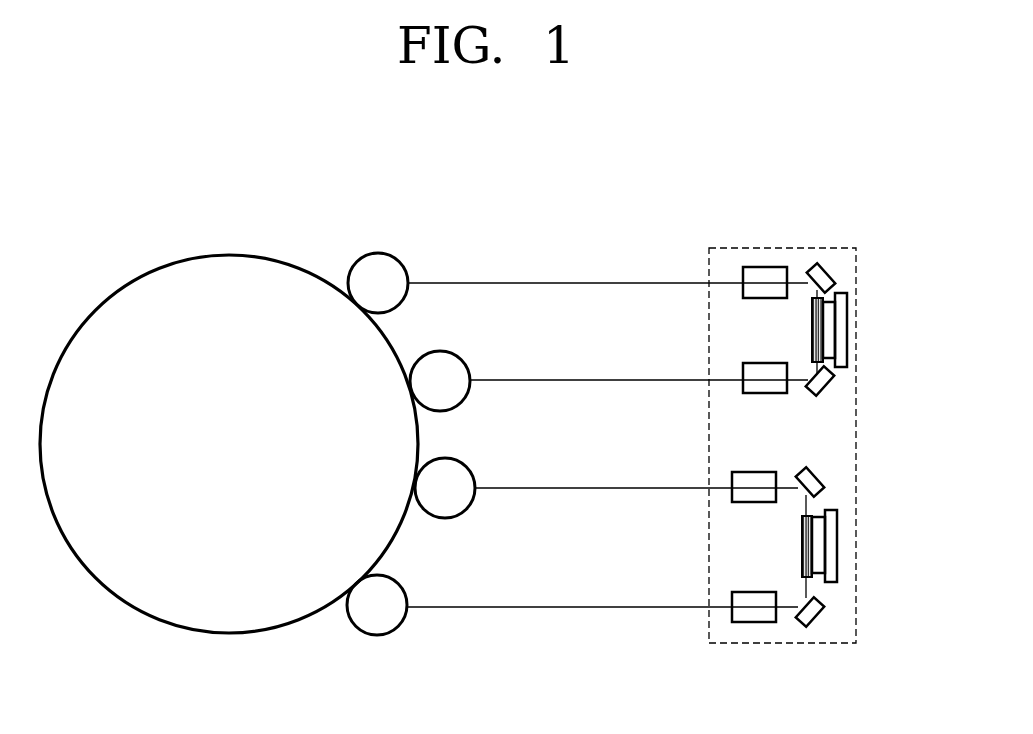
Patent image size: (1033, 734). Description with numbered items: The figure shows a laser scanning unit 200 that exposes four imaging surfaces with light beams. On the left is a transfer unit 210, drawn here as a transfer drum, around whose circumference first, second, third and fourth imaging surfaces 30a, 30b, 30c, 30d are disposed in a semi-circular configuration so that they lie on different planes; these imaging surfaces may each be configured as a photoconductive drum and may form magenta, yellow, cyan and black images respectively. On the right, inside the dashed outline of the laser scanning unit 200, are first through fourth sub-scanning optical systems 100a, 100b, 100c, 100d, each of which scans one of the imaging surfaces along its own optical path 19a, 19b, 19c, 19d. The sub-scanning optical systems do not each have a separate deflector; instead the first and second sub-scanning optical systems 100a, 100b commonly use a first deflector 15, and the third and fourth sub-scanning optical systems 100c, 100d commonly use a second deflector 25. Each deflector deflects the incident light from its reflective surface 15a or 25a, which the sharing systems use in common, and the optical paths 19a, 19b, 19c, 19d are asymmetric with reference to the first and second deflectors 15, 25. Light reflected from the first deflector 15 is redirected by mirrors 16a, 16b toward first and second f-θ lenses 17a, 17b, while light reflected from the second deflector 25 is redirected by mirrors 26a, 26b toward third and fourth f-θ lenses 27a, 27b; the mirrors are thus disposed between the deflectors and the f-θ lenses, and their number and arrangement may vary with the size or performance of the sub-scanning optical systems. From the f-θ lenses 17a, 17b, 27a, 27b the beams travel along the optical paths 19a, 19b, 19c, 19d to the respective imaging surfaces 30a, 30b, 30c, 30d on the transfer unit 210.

The transfer unit 210 is at (232, 263).
The first imaging surface 30a is at (380, 254).
The second imaging surface 30b is at (443, 354).
The third imaging surface 30c is at (452, 470).
The fourth imaging surface 30d is at (390, 592).
The optical path 19a is at (577, 282).
The optical path 19b is at (583, 378).
The optical path 19c is at (587, 487).
The optical path 19d is at (585, 605).
The laser scanning unit 200 is at (857, 263).
The first sub-scanning optical system 100a is at (754, 243).
The second sub-scanning optical system 100b is at (781, 362).
The third sub-scanning optical system 100c is at (739, 454).
The fourth sub-scanning optical system 100d is at (755, 610).
The first f-θ lens 17a is at (765, 266).
The second f-θ lens 17b is at (767, 362).
The third f-θ lens 27a is at (755, 471).
The fourth f-θ lens 27b is at (755, 591).
The mirror 16a is at (823, 263).
The mirror 16b is at (835, 392).
The mirror 26a is at (812, 470).
The mirror 26b is at (818, 626).
The first deflector 15 is at (871, 337).
The reflective surface 15a is at (832, 286).
The second deflector 25 is at (863, 542).
The reflective surface 25a is at (812, 578).